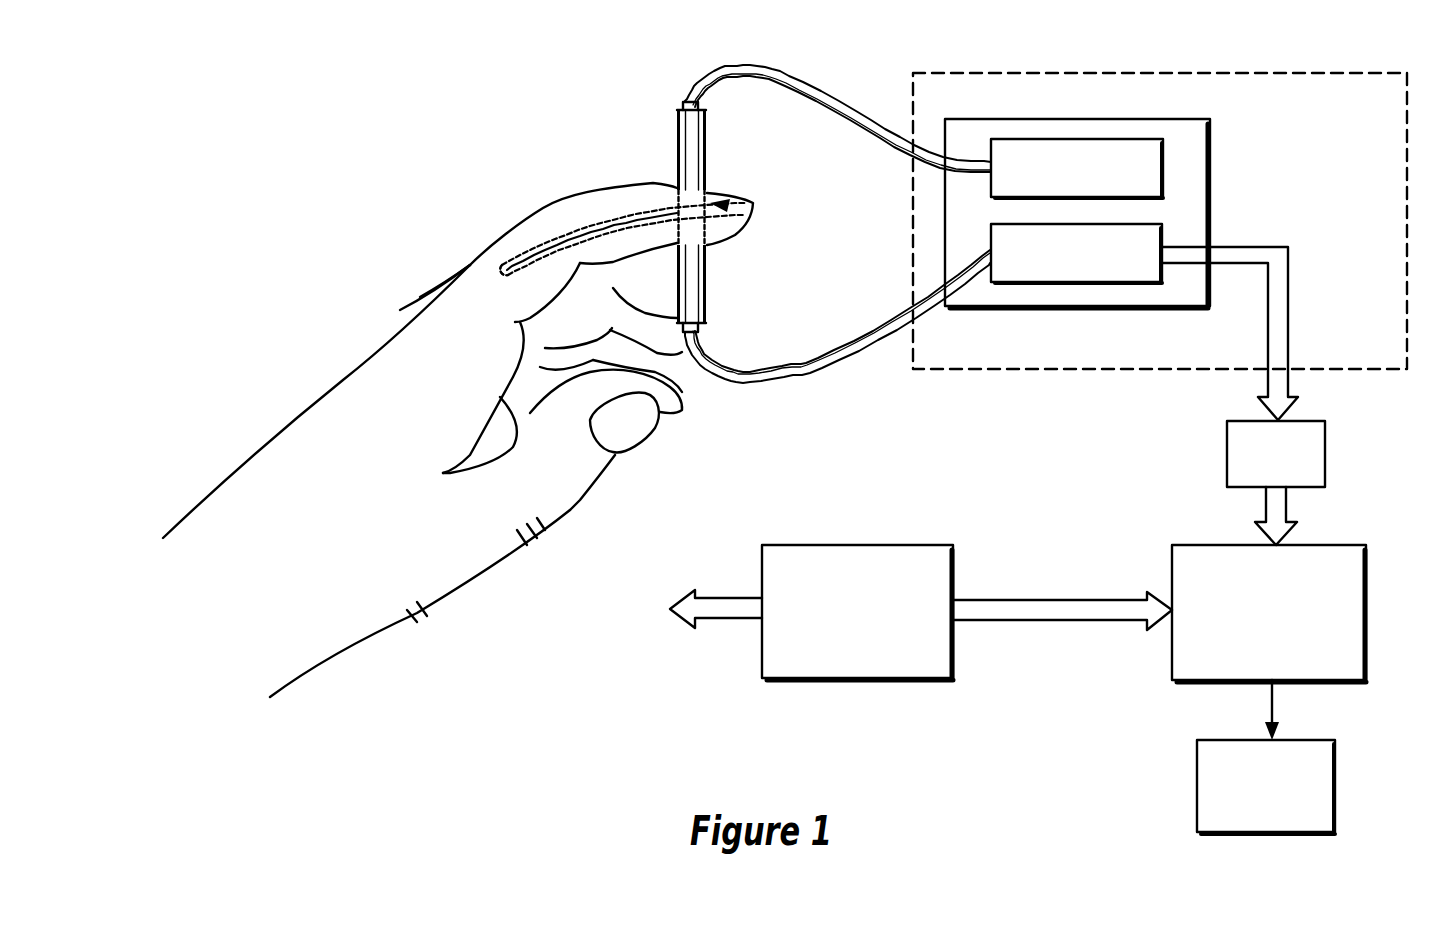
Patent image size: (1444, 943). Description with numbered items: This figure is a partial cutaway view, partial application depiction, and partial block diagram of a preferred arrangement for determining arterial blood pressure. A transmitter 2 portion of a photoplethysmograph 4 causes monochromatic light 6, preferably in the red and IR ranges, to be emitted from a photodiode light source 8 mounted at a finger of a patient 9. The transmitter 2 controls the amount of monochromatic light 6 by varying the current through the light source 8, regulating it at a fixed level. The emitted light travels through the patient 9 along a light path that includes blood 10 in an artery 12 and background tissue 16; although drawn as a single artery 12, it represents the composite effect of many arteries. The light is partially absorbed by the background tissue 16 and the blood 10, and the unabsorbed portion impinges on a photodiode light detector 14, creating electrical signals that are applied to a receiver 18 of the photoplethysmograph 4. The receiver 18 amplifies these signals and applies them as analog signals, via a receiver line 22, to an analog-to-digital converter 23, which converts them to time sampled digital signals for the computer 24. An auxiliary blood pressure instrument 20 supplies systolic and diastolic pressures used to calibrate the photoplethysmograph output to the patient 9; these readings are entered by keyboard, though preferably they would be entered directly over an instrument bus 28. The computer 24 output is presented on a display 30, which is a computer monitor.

The transmitter 2 is at (1120, 139).
The photoplethysmograph 4 is at (914, 110).
The monochromatic light 6 is at (677, 207).
The photodiode light source 8 is at (707, 145).
The patient 9 is at (363, 350).
The blood 10 is at (600, 222).
The artery 12 is at (520, 250).
The photodiode light detector 14 is at (708, 261).
The background tissue 16 is at (753, 207).
The receiver 18 is at (1036, 283).
The auxiliary blood pressure instrument 20 is at (895, 545).
The receiver line 22 is at (1289, 290).
The analog-to-digital converter 23 is at (1326, 446).
The computer 24 is at (1311, 545).
The instrument bus 28 is at (1036, 600).
The display 30 is at (1300, 740).